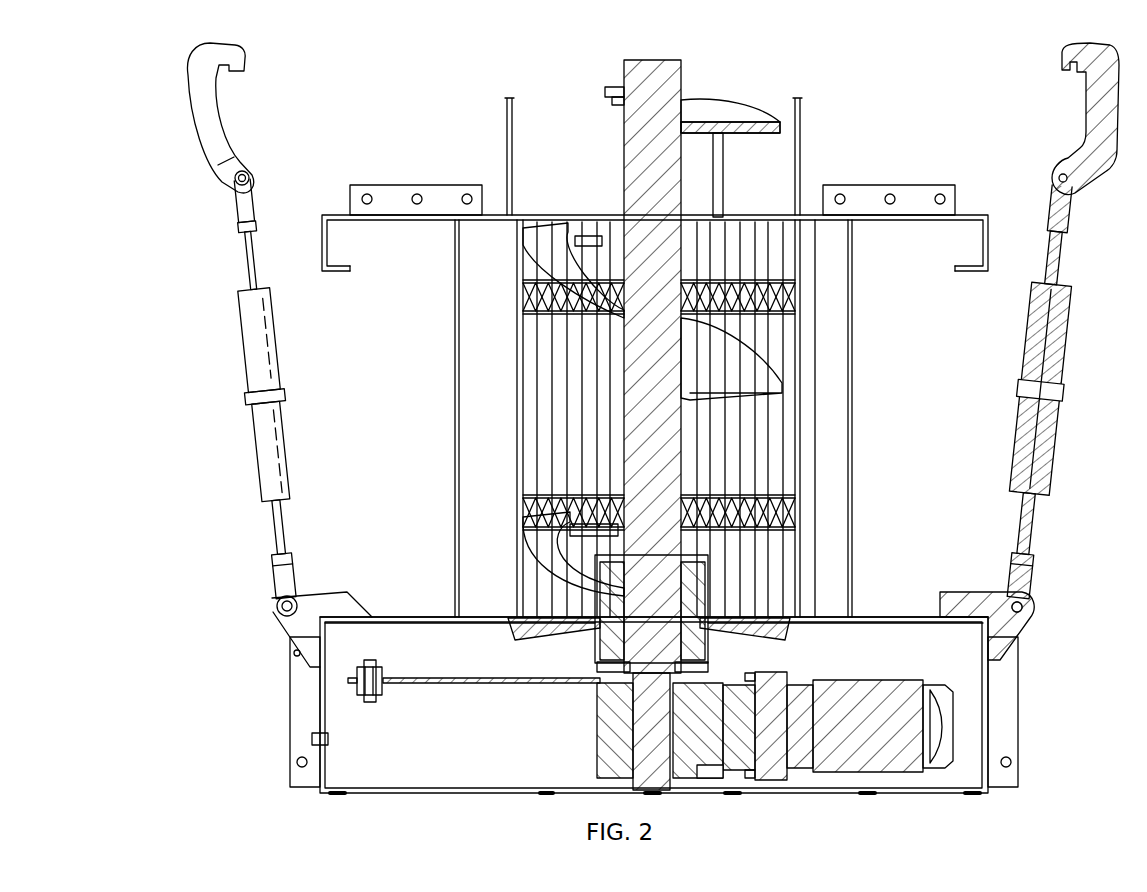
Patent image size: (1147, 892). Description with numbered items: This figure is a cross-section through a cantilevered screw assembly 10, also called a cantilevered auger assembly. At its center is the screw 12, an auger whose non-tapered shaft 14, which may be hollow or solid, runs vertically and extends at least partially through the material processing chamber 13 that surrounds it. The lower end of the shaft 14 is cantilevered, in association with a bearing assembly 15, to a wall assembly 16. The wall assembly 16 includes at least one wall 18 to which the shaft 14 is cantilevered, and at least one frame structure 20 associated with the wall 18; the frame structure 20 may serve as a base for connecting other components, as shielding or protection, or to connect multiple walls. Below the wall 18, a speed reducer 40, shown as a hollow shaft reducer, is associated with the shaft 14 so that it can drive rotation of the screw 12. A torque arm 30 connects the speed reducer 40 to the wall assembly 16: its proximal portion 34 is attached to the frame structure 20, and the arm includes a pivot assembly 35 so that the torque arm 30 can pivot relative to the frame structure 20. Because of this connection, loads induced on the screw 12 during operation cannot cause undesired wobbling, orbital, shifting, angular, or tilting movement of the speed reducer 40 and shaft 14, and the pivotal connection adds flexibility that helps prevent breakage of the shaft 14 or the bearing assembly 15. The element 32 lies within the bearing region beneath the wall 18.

The cantilevered screw assembly 10 is at (92, 304).
The screw 12 is at (780, 347).
The material processing chamber 13 is at (517, 426).
The shaft 14 is at (682, 84).
The bearing assembly 15 is at (592, 566).
The wall assembly 16 is at (893, 612).
The wall 18 is at (421, 617).
The frame structure 20 is at (320, 713).
The torque arm 30 is at (498, 688).
The bearing assembly 32 is at (580, 688).
The proximal portion 34 is at (400, 686).
The pivot assembly 35 is at (352, 680).
The speed reducer 40 is at (708, 779).